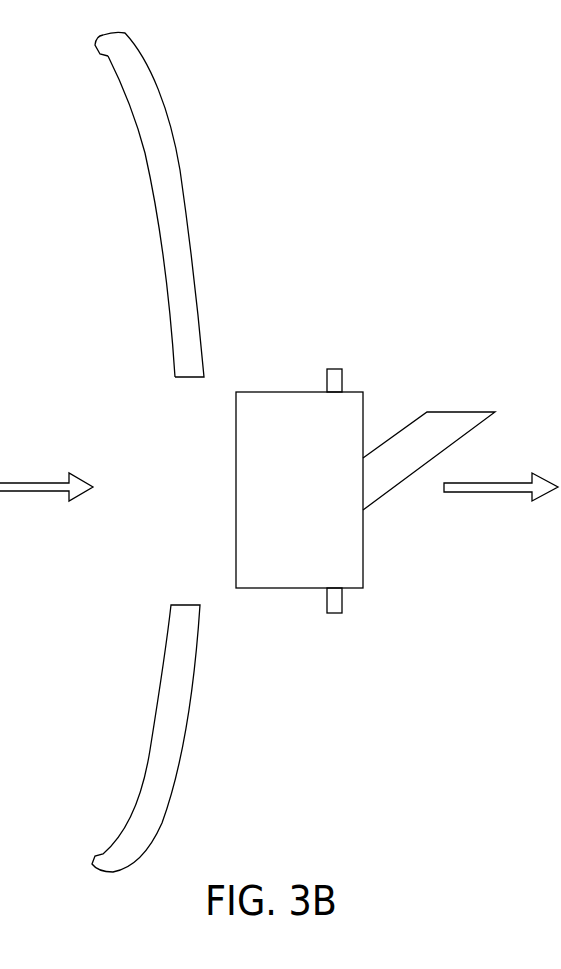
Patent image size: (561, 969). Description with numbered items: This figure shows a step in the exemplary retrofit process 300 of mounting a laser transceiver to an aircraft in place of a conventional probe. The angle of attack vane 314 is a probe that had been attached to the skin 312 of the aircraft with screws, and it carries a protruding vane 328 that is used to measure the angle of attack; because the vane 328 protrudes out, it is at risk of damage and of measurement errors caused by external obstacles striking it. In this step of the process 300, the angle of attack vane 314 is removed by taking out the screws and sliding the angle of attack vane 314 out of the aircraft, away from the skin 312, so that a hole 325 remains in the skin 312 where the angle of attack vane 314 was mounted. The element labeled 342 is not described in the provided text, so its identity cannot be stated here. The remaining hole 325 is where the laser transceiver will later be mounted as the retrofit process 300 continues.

The process 300 is at (279, 446).
The skin 312 is at (187, 200).
The angle of attack vane 314 is at (283, 567).
The hole 325 is at (174, 433).
The vane 328 is at (406, 462).
The blade edge surface 342 is at (158, 200).